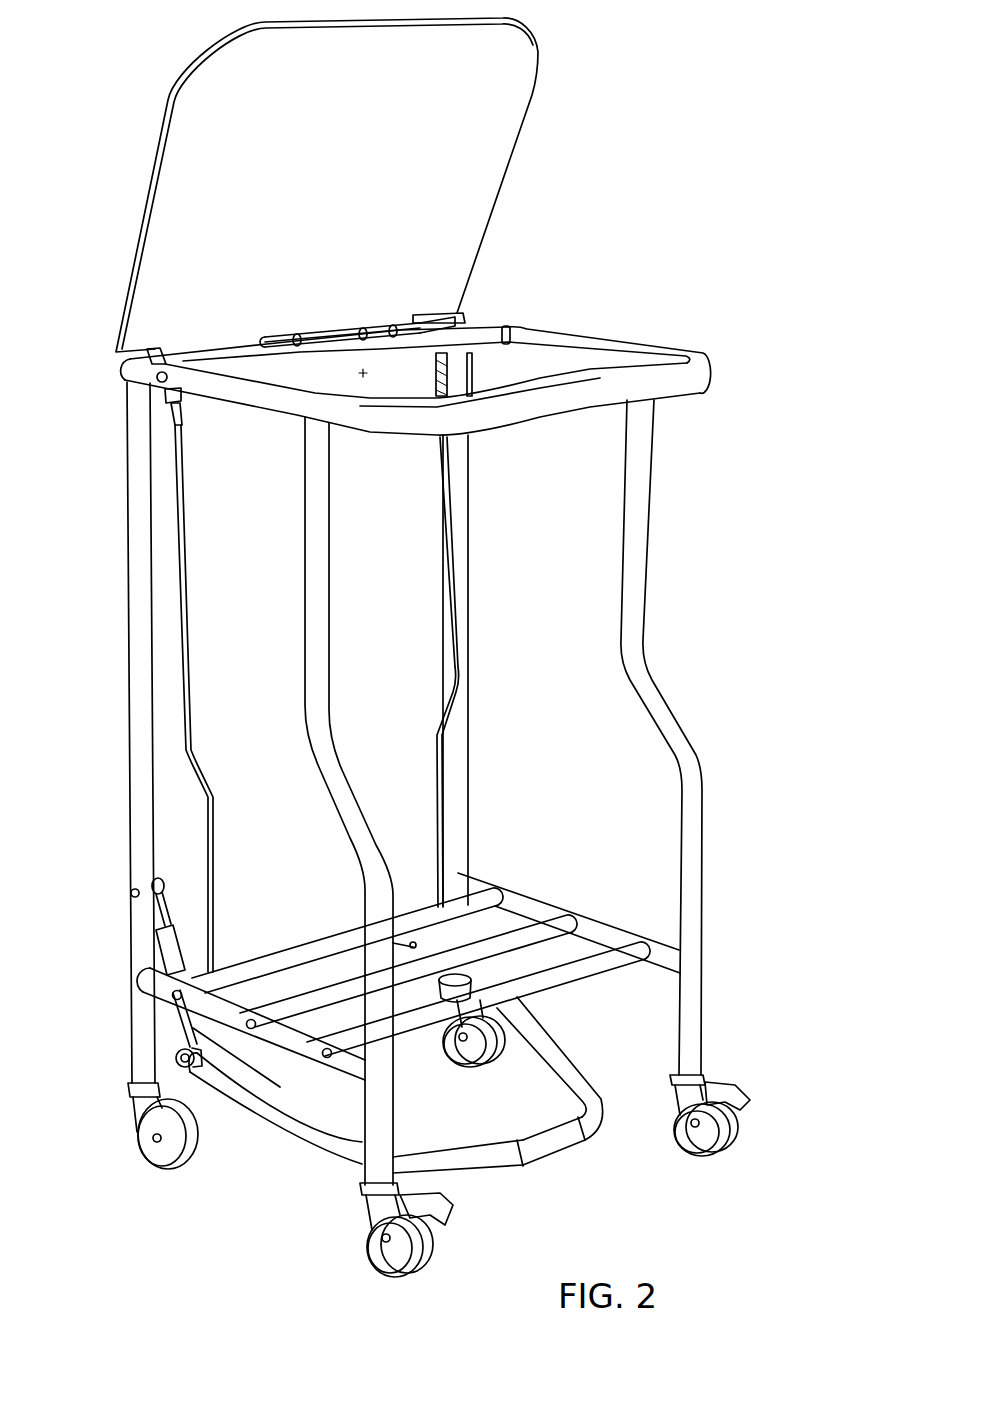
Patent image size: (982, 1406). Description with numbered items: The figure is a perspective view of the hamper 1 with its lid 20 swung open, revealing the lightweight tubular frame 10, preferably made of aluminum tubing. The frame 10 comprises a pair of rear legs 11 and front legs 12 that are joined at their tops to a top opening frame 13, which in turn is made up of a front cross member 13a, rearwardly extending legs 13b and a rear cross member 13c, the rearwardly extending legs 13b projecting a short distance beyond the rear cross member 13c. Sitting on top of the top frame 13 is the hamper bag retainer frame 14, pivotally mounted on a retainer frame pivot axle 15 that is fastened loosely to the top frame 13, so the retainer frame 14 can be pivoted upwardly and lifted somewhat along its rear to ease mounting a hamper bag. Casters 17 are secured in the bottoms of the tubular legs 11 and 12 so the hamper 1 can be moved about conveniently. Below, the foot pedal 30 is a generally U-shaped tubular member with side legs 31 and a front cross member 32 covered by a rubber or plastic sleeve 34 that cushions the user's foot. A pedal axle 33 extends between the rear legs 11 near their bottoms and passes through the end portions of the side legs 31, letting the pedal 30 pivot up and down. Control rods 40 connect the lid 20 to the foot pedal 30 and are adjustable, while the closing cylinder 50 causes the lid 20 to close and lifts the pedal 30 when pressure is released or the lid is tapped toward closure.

The hamper 1 is at (764, 288).
The frame 10 is at (700, 702).
The rear legs 11 is at (130, 725).
The front legs 12 is at (372, 852).
The top opening frame 13 is at (713, 378).
The front cross member 13a is at (558, 404).
The rearwardly extending legs 13b is at (592, 348).
The rear cross member 13c is at (388, 350).
The hamper bag retainer frame 14 is at (640, 342).
The retainer frame pivot axle 15 is at (345, 335).
The casters 17 is at (162, 1157).
The lid 20 is at (307, 191).
The foot pedal 30 is at (323, 1137).
The side legs 31 is at (277, 1117).
The front cross member 32 is at (490, 1167).
The pedal axle 33 is at (162, 1021).
The sleeve 34 is at (560, 1143).
The control rods 40 is at (188, 725).
The closing cylinder 50 is at (186, 964).